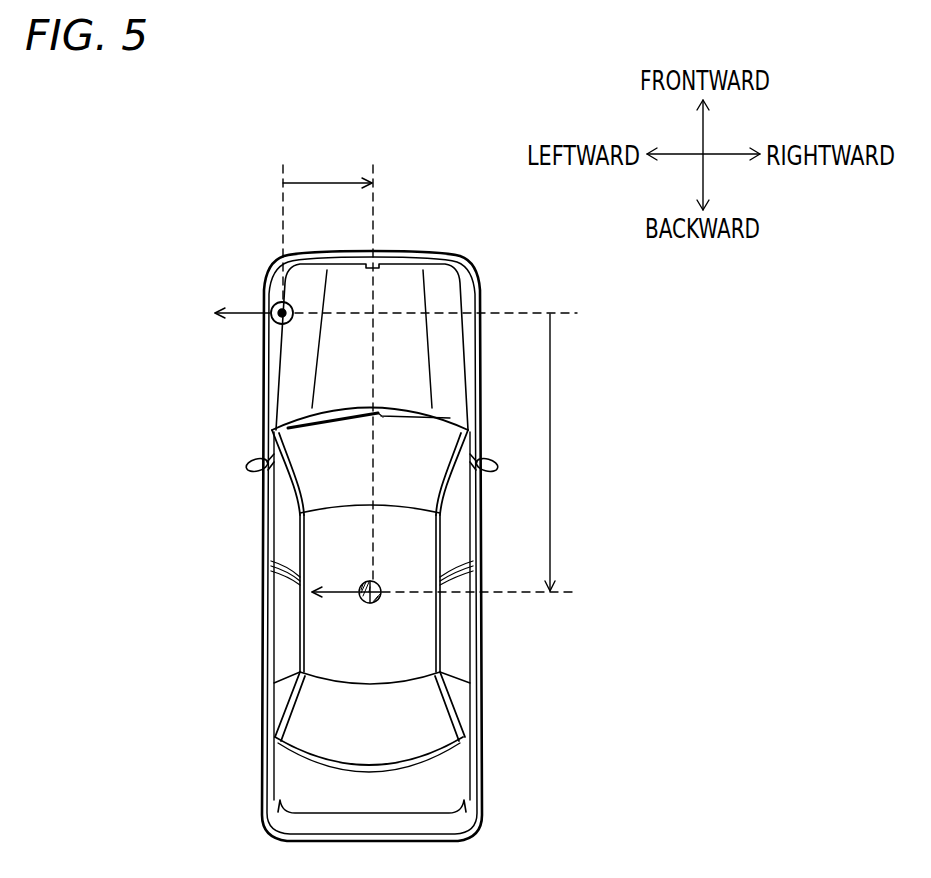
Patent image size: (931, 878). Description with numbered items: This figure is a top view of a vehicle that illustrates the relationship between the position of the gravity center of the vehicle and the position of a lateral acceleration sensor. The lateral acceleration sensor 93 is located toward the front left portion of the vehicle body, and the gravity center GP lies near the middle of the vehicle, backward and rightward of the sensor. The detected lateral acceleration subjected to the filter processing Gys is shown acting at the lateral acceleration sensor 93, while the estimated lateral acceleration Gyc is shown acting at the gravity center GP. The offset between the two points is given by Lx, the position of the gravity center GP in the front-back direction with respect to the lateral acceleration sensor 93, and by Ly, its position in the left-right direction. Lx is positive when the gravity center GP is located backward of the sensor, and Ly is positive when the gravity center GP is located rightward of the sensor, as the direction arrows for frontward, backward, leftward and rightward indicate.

The lateral acceleration sensor 93 is at (280, 325).
The gravity center GP is at (370, 604).
The detected lateral acceleration subjected to the filter processing Gys is at (217, 311).
The estimated lateral acceleration Gyc is at (334, 607).
The position of the gravity center in the front-back direction Lx is at (569, 452).
The position of the gravity center in the left-right direction Ly is at (327, 167).